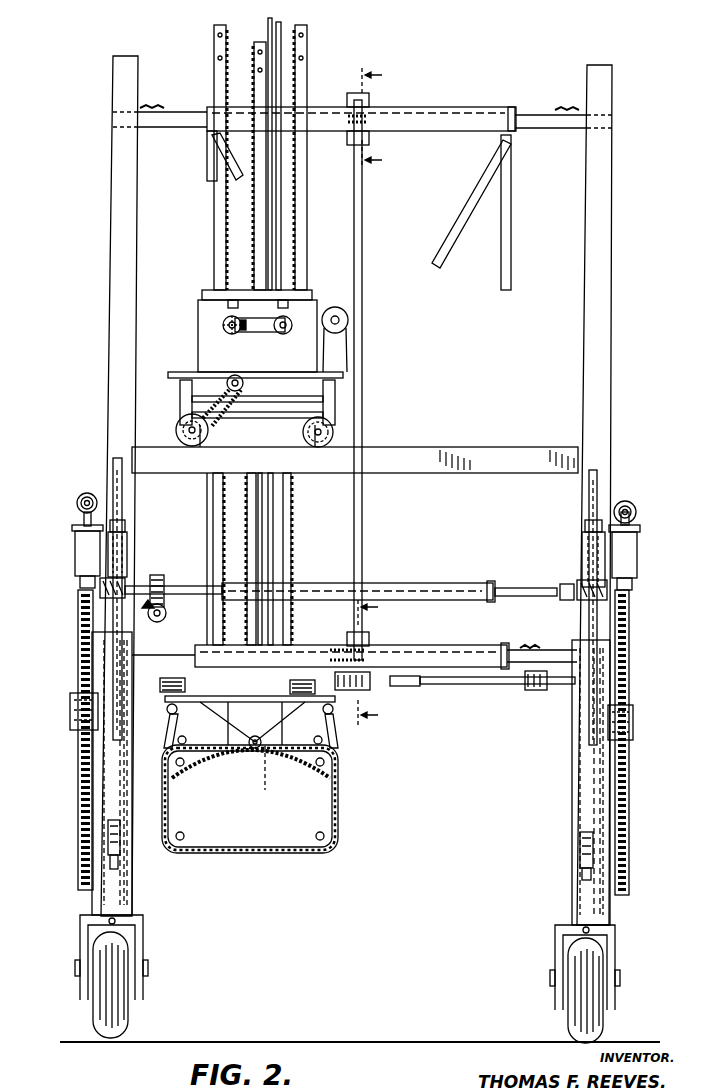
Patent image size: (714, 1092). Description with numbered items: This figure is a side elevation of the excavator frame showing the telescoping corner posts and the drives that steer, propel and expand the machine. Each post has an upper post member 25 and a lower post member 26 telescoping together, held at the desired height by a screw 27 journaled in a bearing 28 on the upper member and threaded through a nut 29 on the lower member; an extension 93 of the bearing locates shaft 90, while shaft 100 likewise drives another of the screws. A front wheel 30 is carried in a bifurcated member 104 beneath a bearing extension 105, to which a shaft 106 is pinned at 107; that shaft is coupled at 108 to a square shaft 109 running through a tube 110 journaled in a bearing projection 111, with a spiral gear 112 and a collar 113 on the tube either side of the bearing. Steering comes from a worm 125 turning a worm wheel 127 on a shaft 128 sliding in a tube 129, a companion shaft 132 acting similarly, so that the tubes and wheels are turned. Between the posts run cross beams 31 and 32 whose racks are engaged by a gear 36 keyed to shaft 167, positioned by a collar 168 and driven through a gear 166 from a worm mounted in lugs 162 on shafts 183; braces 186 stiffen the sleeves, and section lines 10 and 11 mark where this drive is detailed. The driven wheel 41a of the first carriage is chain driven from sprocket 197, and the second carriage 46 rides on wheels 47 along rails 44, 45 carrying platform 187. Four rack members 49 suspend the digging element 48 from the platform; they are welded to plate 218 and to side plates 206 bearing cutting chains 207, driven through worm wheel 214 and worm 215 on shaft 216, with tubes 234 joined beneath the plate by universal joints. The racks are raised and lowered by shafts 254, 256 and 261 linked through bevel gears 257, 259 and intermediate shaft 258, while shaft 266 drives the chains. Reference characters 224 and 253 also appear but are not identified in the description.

The section line 10- 10 is at (384, 118).
The section line 11- 11 is at (379, 662).
The upper post member 25 is at (112, 250).
The lower post member 26 is at (78, 760).
The screw 27 is at (78, 798).
The bearing 28 is at (74, 550).
The nut 29 is at (70, 718).
The wheel 30 is at (92, 1012).
The cross beam 31 is at (520, 648).
The cross beam 32 is at (186, 654).
The gear 36 is at (348, 642).
The wheel 41a is at (362, 296).
The rail 44 is at (176, 430).
The rail 45 is at (194, 416).
The second carriage 46 is at (194, 368).
The wheel 47 is at (181, 392).
The digging element 48 is at (338, 832).
The rack member 49 is at (214, 44).
The shaft 90 is at (77, 503).
The extension 93 is at (72, 528).
The shaft 100 is at (638, 508).
The bifurcated member 104 is at (94, 974).
The bearing extension 105 is at (125, 860).
The shaft 106 is at (121, 848).
The pin 107 is at (88, 922).
The coupling 108 is at (108, 846).
The square shaft 109 is at (112, 463).
The tube 110 is at (92, 668).
The bearing projection 111 is at (128, 542).
The spiral gear 112 is at (100, 592).
The collar 113 is at (126, 524).
The worm 125 is at (152, 619).
The worm wheel 127 is at (160, 574).
The shaft 128 is at (162, 584).
The tube 129 is at (384, 582).
The shaft 132 is at (537, 586).
The lug 162 is at (411, 687).
The gear 166 is at (364, 689).
The shaft 167 is at (362, 532).
The collar 168 is at (354, 94).
The shaft 183 is at (472, 690).
The brace 186 is at (500, 260).
The platform 187 is at (168, 374).
The sprocket 197 is at (277, 432).
The side plate 206 is at (248, 838).
The cutting chain 207 is at (302, 852).
The worm wheel 214 is at (252, 750).
The worm 215 is at (275, 774).
The shaft 216 is at (281, 212).
The plate 218 is at (325, 734).
The rack 224 is at (256, 246).
The tube 234 is at (232, 732).
The gear housing 253 is at (206, 320).
The shaft 254 is at (298, 320).
The shaft 256 is at (223, 324).
The bevel gears 257 is at (285, 336).
The intermediate shaft 258 is at (251, 343).
The bevel gears 259 is at (223, 334).
The shaft 261 is at (232, 305).
The shaft 266 is at (286, 306).